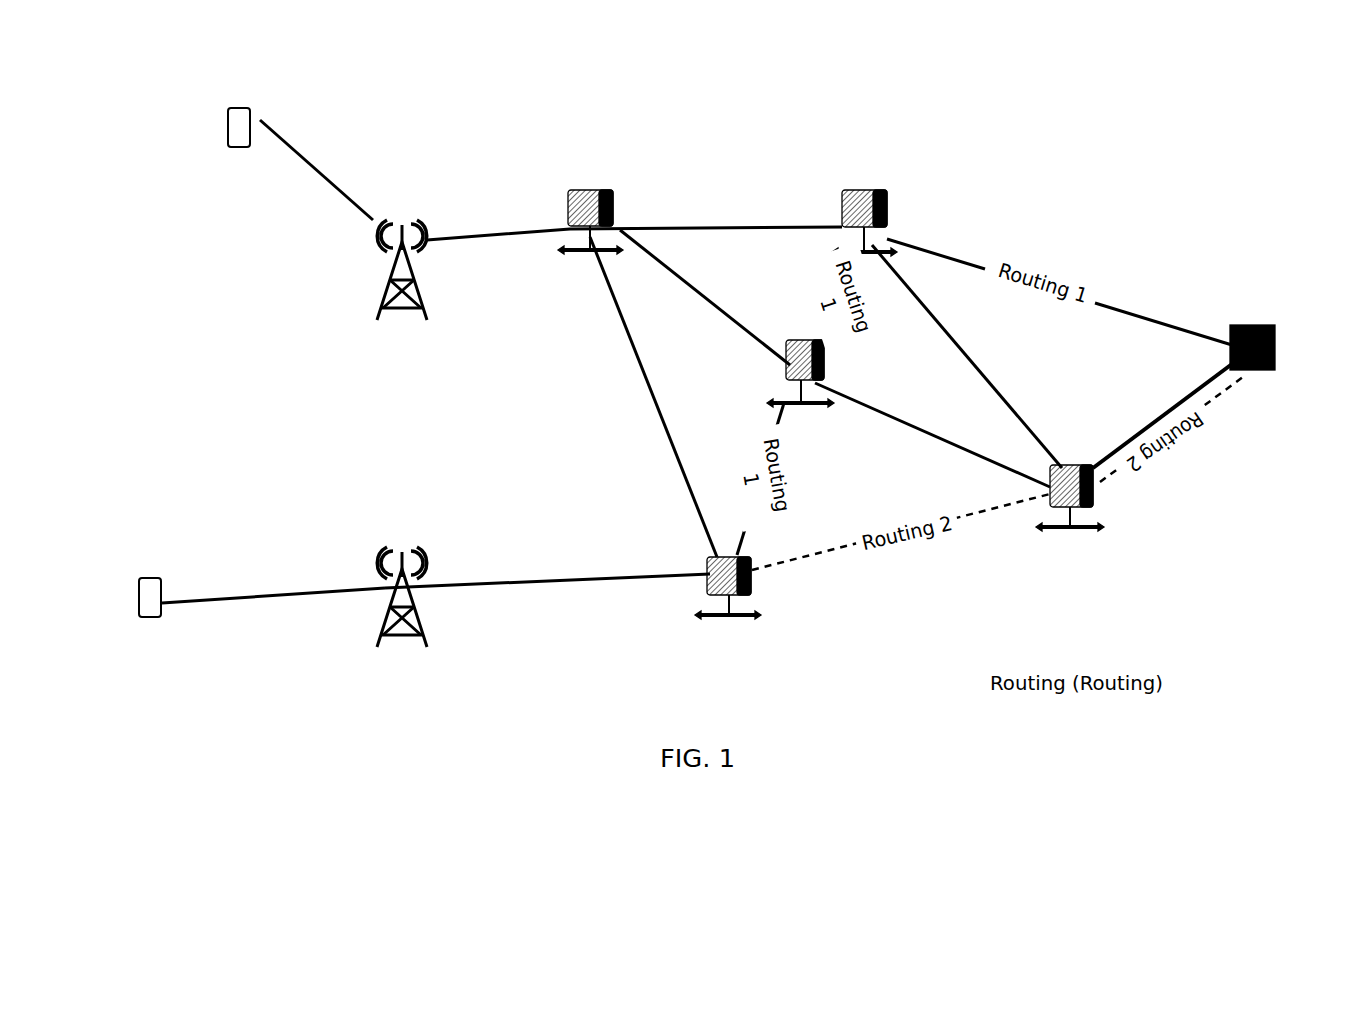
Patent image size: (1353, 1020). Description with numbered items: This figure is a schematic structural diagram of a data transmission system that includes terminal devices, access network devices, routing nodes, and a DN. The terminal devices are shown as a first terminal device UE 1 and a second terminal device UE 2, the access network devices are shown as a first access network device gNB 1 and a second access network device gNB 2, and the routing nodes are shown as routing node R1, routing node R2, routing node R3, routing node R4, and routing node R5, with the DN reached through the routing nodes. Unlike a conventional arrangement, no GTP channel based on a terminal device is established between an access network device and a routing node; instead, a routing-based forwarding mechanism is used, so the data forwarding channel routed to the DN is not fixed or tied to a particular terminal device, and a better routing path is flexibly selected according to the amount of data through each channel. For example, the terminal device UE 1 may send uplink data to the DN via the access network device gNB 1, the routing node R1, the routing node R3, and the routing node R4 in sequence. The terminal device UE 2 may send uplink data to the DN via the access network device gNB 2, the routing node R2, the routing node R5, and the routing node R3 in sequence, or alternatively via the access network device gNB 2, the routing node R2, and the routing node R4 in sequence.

The terminal device UE 1 is at (292, 164).
The terminal device UE 2 is at (256, 620).
The access network device gNB 1 is at (401, 290).
The access network device gNB 2 is at (399, 616).
The routing node R1 is at (588, 242).
The routing node R2 is at (728, 607).
The routing node R3 is at (885, 223).
The routing node R4 is at (1070, 516).
The routing node R5 is at (819, 373).
The element DN is at (1252, 367).